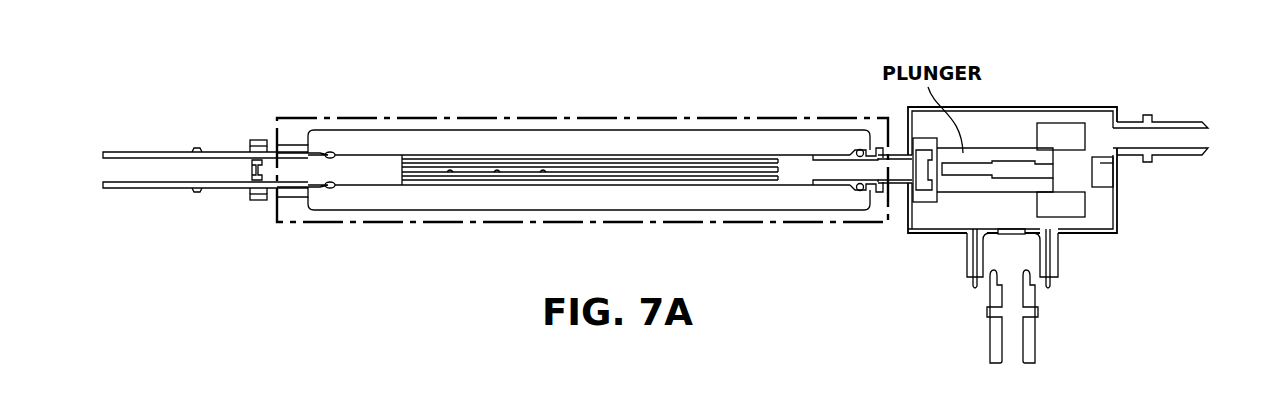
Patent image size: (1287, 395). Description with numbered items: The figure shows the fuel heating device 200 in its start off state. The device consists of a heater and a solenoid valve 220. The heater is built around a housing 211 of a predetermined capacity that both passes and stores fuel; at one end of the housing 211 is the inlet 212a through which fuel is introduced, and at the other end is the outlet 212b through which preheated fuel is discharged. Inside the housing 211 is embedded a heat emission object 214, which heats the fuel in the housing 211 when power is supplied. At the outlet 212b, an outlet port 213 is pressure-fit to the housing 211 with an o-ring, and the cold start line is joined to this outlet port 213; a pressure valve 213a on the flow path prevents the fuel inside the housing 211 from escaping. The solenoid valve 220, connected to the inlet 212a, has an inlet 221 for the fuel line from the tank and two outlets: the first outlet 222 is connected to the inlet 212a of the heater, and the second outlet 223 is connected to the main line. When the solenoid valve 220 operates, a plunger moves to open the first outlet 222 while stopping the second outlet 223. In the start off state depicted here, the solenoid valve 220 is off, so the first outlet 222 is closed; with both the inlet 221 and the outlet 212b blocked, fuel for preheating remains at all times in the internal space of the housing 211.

The fuel heating device 200 is at (372, 228).
The housing 211 is at (433, 197).
The inlet 212a is at (843, 153).
The outlet 212b is at (293, 197).
The outlet port 213 is at (158, 188).
The pressure valve 213a is at (251, 184).
The heat emission object 214 is at (480, 160).
The solenoid valve 220 is at (1138, 188).
The inlet 221 is at (1028, 335).
The first outlet 222 is at (903, 188).
The second outlet 223 is at (1180, 123).